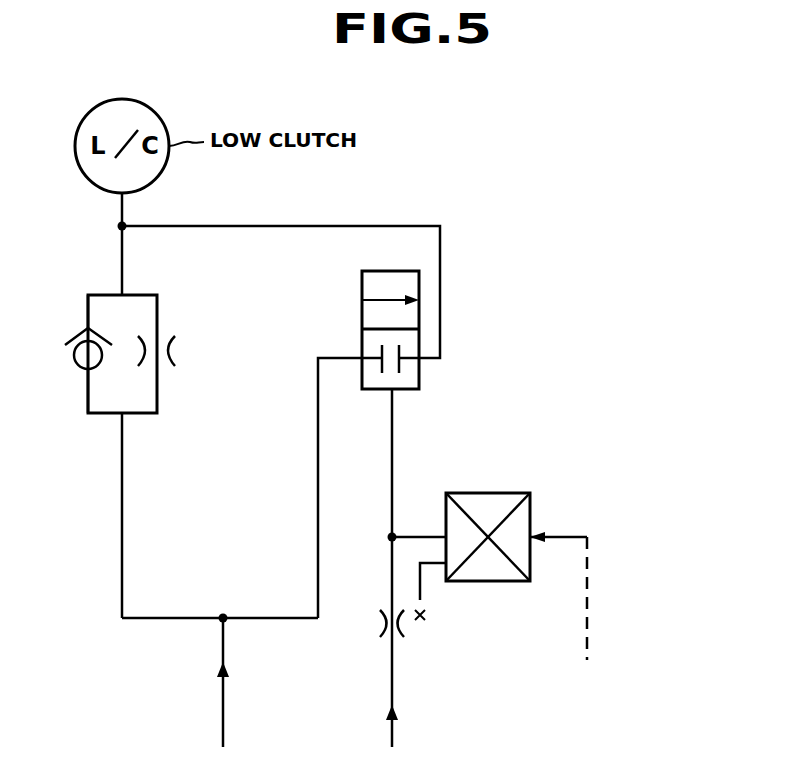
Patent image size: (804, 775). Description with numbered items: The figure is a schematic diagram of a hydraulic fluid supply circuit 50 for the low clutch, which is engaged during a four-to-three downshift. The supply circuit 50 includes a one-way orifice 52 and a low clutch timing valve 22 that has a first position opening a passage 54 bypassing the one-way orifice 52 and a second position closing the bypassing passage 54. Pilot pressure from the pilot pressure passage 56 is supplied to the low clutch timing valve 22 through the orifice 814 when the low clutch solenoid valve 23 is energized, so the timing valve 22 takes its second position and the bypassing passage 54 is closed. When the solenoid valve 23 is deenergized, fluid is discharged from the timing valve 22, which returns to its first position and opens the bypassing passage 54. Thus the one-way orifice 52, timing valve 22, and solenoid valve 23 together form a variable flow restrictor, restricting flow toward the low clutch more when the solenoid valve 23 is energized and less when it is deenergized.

The low clutch timing valve 22 is at (420, 283).
The low clutch solenoid valve 23 is at (478, 493).
The hydraulic fluid supply circuit 50 is at (222, 645).
The one-way orifice 52 is at (140, 320).
The bypassing passage 54 is at (345, 226).
The pilot pressure passage 56 is at (394, 688).
The orifice 814 is at (380, 622).